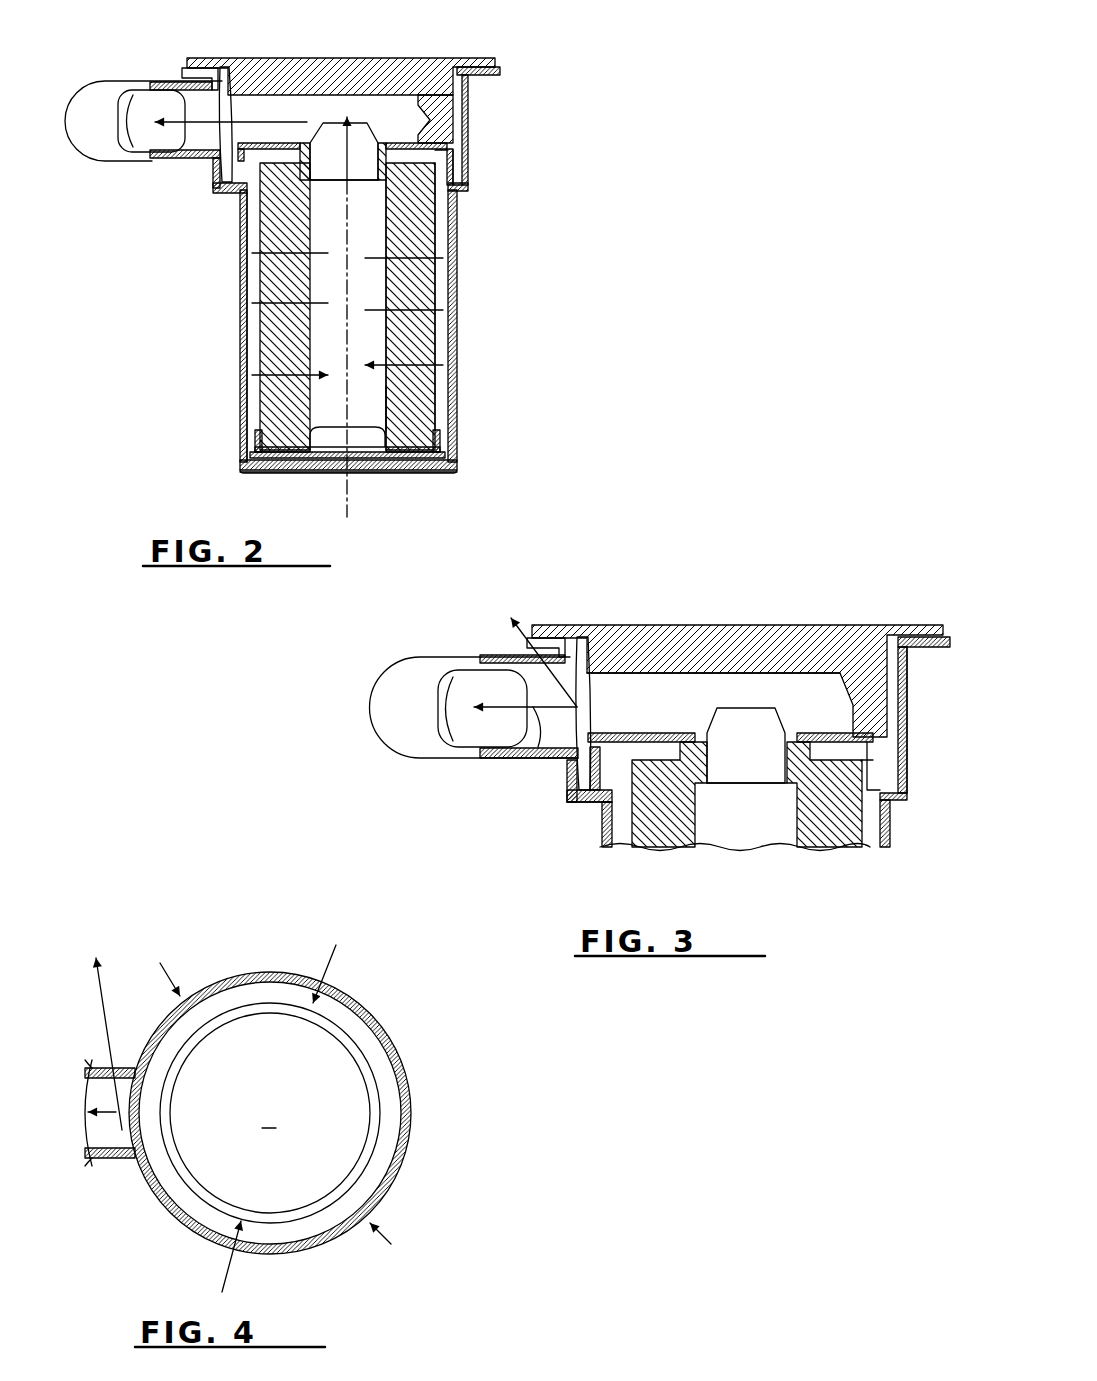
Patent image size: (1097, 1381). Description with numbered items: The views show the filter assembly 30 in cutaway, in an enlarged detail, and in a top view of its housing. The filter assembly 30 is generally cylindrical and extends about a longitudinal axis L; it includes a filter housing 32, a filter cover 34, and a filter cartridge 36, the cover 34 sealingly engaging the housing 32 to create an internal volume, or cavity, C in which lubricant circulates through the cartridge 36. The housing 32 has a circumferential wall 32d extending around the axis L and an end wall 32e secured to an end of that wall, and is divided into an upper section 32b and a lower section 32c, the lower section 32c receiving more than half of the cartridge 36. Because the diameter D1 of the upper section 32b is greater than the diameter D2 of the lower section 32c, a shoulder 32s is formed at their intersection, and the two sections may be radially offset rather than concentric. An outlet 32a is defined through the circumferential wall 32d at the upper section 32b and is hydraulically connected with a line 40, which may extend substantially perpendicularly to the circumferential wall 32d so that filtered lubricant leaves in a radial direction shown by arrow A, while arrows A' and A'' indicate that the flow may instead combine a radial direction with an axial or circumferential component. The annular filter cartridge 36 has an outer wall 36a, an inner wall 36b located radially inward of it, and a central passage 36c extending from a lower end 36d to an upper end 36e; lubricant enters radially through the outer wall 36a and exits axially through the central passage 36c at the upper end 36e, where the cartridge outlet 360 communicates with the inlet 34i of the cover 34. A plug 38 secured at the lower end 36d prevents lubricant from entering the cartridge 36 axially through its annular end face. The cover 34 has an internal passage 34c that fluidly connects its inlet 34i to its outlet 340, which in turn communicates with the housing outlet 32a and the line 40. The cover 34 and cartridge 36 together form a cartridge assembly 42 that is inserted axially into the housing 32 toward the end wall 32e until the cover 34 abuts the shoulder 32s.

In FIG. 2, the filter assembly 30 is at (555, 109).
In FIG. 3, the filter assembly 30 is at (783, 534).
In FIG. 2, the filter housing 32 is at (237, 240).
In FIG. 3, the filter housing 32 is at (600, 830).
In FIG. 4, the filter housing 32 is at (252, 972).
In FIG. 2, the outlet 32a is at (172, 171).
In FIG. 3, the outlet 32a is at (586, 656).
In FIG. 4, the outlet 32a is at (118, 1131).
In FIG. 3, the upper section 32b is at (922, 648).
In FIG. 2, the lower section 32c is at (237, 290).
In FIG. 2, the circumferential wall 32d is at (242, 425).
In FIG. 4, the circumferential wall 32d is at (372, 1010).
In FIG. 2, the end wall 32e is at (427, 472).
In FIG. 3, the shoulder 32s is at (580, 806).
In FIG. 4, the shoulder 32s is at (170, 1185).
In FIG. 2, the filter cover 34 is at (415, 76).
In FIG. 3, the filter cover 34 is at (718, 640).
In FIG. 3, the internal passage 34c is at (810, 703).
In FIG. 3, the inlet of the cover 34i is at (752, 791).
In FIG. 2, the filter cartridge 36 is at (410, 285).
In FIG. 3, the filter cartridge 36 is at (830, 818).
In FIG. 2, the outer wall 36a is at (430, 405).
In FIG. 2, the inner wall 36b is at (386, 386).
In FIG. 2, the central passage 36c is at (361, 248).
In FIG. 2, the lower end 36d is at (425, 447).
In FIG. 2, the upper end 36e is at (455, 158).
In FIG. 2, the plug 38 is at (240, 463).
In FIG. 3, the line 40 is at (448, 760).
In FIG. 4, the line 40 is at (88, 1062).
In FIG. 3, the cartridge assembly 42 is at (655, 856).
In FIG. 3, the outlet of the cover 340 is at (600, 703).
In FIG. 2, the outlet of the filter cartridge 360 is at (363, 166).
In FIG. 3, the outlet of the filter cartridge 360 is at (752, 838).
In FIG. 3, the arrow A is at (525, 752).
In FIG. 4, the arrow A is at (87, 1106).
In FIG. 3, the arrow A' is at (544, 642).
In FIG. 4, the arrow A'' is at (124, 1017).
In FIG. 2, the filter internal volume C is at (257, 342).
In FIG. 4, the filter internal volume C is at (270, 1114).
In FIG. 4, the diameter of the upper section D1 is at (391, 1244).
In FIG. 4, the diameter of the lower section D2 is at (325, 972).
In FIG. 2, the longitudinal axis L is at (350, 498).